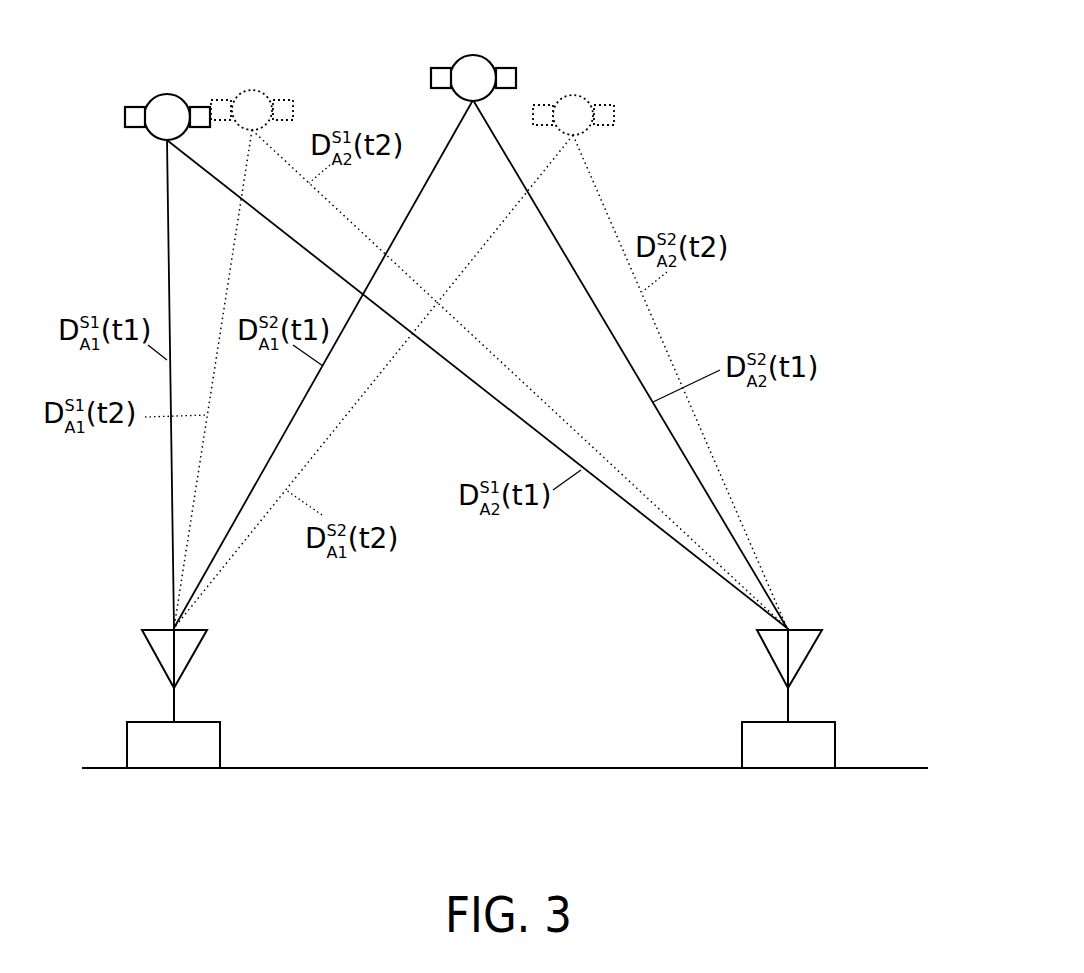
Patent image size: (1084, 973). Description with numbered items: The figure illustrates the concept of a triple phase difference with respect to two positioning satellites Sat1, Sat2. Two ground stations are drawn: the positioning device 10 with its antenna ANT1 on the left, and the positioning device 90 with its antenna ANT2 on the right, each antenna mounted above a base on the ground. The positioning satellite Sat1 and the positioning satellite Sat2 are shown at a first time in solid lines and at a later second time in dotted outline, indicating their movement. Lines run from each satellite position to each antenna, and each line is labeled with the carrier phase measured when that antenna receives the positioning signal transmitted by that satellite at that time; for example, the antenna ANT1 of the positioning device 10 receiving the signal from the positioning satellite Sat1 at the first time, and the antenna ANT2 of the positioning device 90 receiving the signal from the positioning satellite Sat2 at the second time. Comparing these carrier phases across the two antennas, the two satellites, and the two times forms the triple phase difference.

The positioning device 10 is at (197, 696).
The positioning device 90 is at (821, 689).
The antenna ANT1 is at (193, 647).
The antenna ANT2 is at (808, 648).
The positioning satellite Sat1 is at (148, 101).
The positioning satellite Sat2 is at (507, 40).